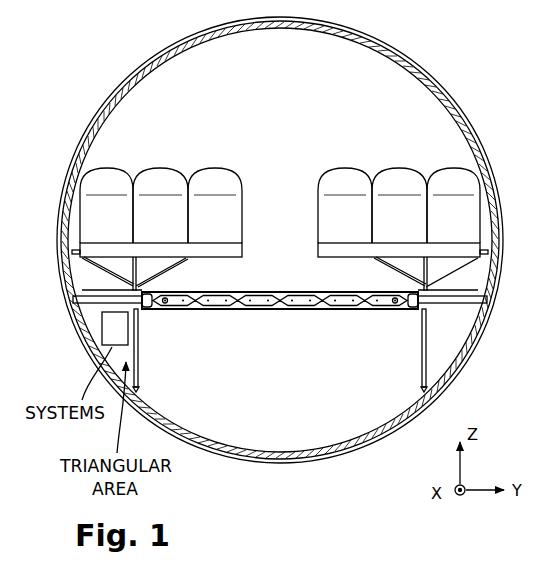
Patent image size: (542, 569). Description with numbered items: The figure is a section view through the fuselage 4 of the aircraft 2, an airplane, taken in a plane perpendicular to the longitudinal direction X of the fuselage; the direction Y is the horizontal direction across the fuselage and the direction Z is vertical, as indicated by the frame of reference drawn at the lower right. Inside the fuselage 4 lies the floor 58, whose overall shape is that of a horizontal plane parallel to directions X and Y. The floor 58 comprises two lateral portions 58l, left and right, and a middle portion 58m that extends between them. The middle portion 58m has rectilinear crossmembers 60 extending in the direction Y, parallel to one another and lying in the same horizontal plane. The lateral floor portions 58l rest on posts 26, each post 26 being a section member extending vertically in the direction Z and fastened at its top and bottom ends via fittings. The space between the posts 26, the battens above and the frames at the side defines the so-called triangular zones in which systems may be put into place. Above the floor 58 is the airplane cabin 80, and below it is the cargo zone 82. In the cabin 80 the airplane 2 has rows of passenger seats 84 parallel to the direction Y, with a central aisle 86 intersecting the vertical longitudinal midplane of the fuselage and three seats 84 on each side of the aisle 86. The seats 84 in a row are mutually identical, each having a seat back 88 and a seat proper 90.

The aircraft 2 is at (451, 51).
The fuselage 4 is at (457, 100).
The post 26 is at (142, 373).
The floor 58 is at (332, 316).
The middle portion 58m is at (283, 316).
The lateral portion 58l is at (92, 314).
The crossmember 60 is at (232, 292).
The airplane cabin 80 is at (403, 206).
The cargo zone 82 is at (226, 409).
The passenger seat 84 is at (165, 172).
The central aisle 86 is at (283, 199).
The seat back 88 is at (213, 212).
The seat proper 90 is at (100, 247).